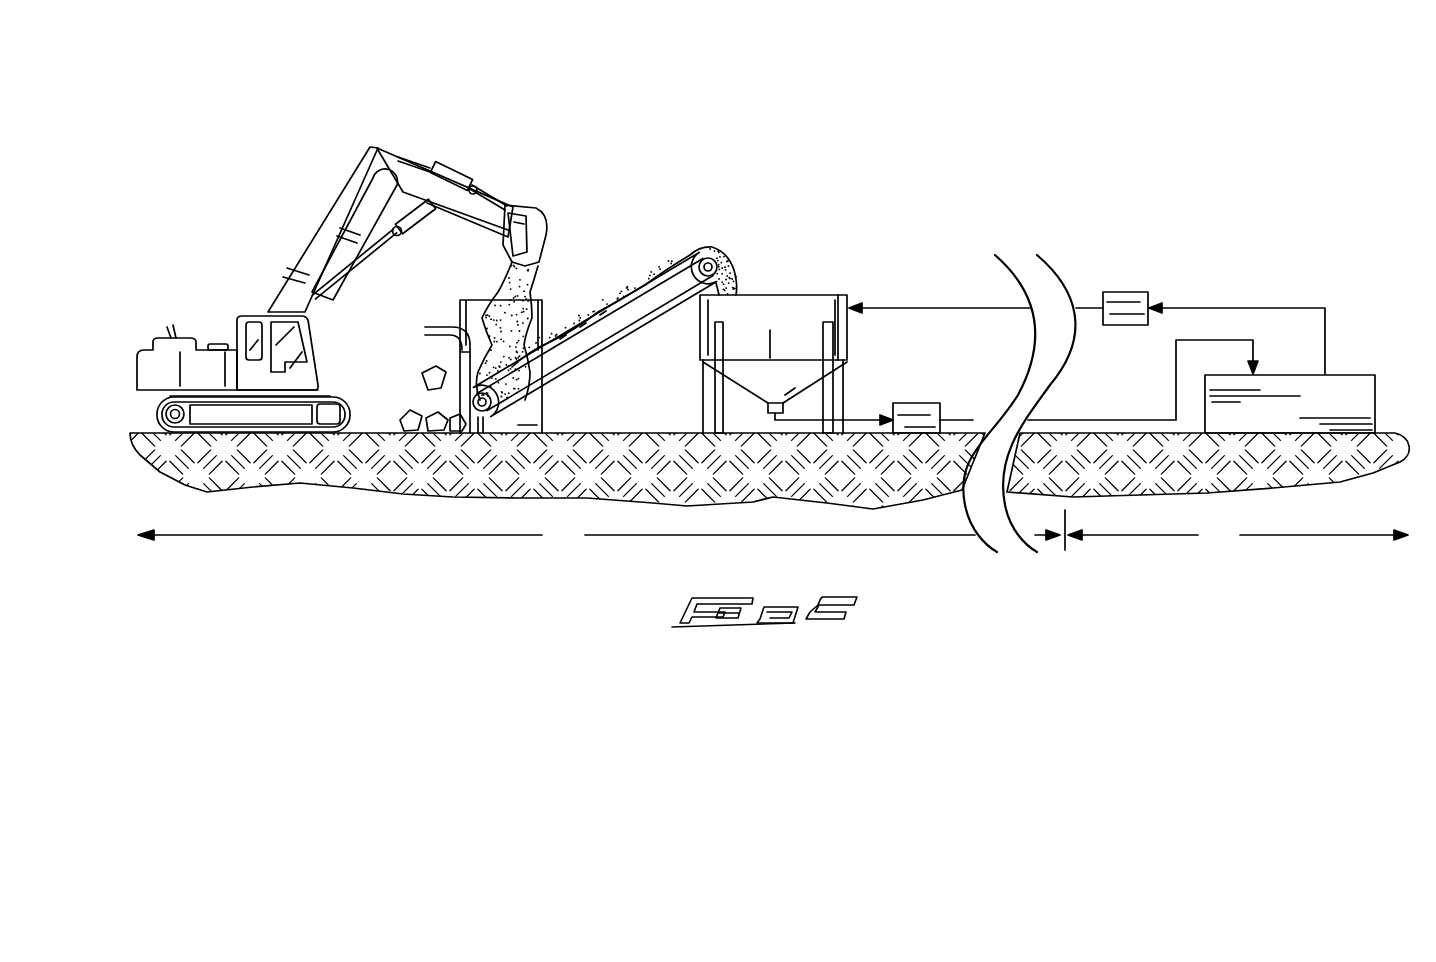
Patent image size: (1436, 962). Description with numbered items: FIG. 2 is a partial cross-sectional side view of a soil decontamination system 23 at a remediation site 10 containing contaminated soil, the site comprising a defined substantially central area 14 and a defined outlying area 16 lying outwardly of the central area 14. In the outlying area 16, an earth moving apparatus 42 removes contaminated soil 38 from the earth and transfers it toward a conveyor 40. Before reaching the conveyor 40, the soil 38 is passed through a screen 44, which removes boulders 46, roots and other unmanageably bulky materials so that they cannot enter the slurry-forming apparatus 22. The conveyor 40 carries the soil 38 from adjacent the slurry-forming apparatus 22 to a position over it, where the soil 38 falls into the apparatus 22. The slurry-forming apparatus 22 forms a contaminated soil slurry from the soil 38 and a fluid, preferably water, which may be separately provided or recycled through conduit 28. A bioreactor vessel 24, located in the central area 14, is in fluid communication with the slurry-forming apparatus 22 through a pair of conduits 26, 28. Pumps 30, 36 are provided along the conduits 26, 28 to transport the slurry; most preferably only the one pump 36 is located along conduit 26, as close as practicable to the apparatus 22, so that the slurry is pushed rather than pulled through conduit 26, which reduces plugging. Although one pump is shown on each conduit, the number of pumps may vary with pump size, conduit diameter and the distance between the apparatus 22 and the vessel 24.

The remediation site 10 is at (1117, 78).
The substantially central area 14 is at (1236, 530).
The outlying area 16 is at (599, 538).
The slurry-forming apparatus 22 is at (760, 316).
The system 23 is at (1222, 208).
The bioreactor vessel 24 is at (1292, 386).
The conduit 26 is at (1112, 418).
The conduit 28 is at (960, 306).
The pump 30 is at (1125, 300).
The pump 36 is at (918, 403).
The contaminated soil 38 is at (518, 285).
The conveyor 40 is at (633, 323).
The earth moving apparatus 42 is at (253, 312).
The screen 44 is at (467, 366).
The boulders 46 is at (408, 418).